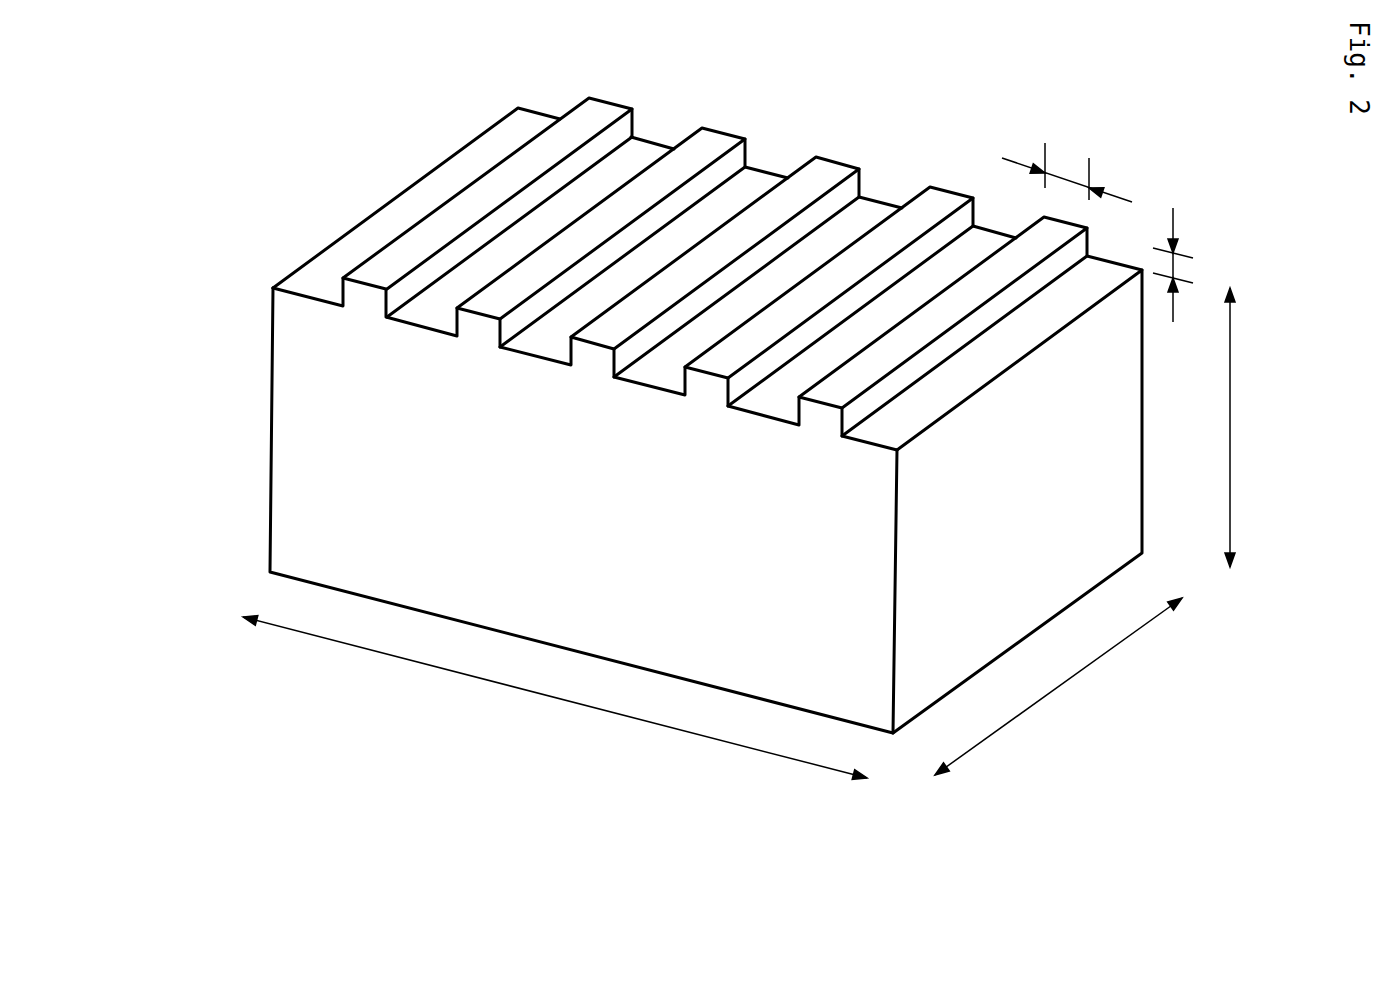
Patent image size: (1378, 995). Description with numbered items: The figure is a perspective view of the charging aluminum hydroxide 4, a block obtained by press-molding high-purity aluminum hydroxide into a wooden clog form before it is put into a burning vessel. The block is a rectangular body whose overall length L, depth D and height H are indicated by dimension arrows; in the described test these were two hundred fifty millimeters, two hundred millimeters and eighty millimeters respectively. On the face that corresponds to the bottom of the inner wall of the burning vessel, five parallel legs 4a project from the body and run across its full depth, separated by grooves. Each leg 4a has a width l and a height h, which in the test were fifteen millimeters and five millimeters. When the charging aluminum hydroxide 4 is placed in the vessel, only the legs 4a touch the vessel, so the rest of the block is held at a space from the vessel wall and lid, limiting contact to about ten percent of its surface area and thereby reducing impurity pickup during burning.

The charging aluminum hydroxide 4 is at (298, 523).
The legs 4a is at (997, 270).
The length of test piece L is at (555, 698).
The depth of test piece D is at (1058, 686).
The height of test piece H is at (1258, 427).
The width of projection l is at (1067, 150).
The height of projection h is at (1184, 265).